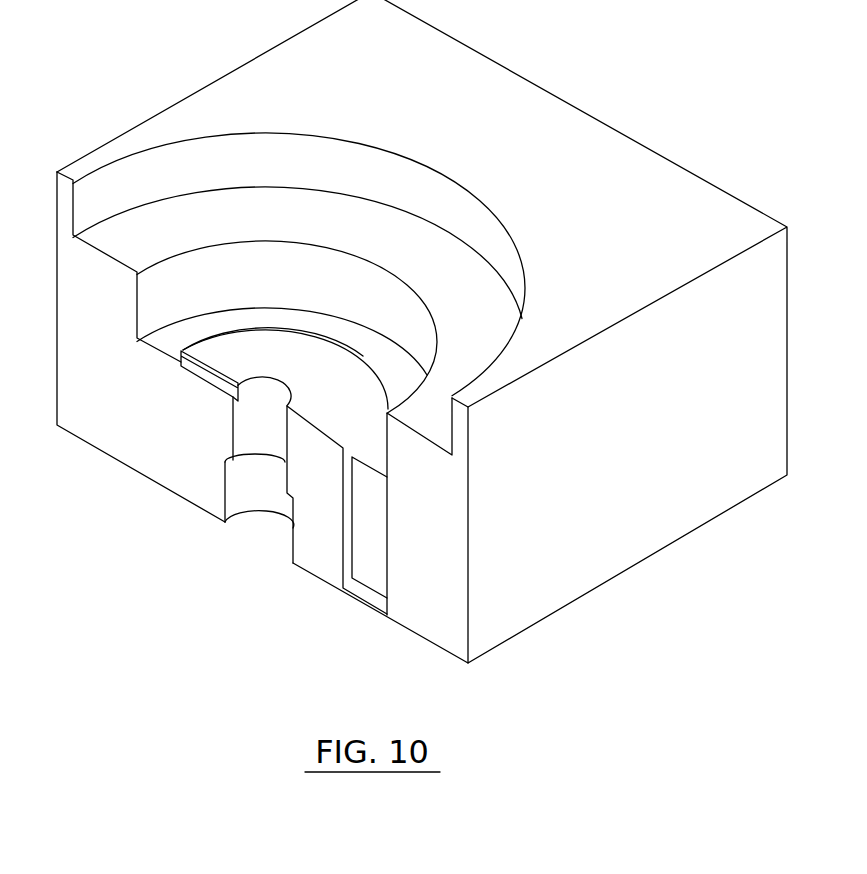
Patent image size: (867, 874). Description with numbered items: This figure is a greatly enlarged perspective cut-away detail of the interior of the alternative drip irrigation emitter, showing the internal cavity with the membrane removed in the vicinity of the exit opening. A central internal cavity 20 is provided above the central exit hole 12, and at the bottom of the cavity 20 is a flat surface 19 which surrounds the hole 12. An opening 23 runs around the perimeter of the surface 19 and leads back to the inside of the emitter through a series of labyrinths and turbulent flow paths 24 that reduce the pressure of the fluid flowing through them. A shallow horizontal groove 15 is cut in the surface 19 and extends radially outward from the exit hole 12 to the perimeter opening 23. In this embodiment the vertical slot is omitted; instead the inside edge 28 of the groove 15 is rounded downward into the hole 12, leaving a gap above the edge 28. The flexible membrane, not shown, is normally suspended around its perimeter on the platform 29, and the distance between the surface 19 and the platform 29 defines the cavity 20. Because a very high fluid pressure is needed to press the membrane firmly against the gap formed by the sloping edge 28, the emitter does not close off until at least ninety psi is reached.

The platform 29 is at (266, 213).
The central internal cavity 20 is at (203, 283).
The opening 23 is at (277, 320).
The flat surface 19 is at (295, 348).
The shallow horizontal groove 15 is at (212, 374).
The inside edge 28 is at (263, 381).
The central exit hole 12 is at (265, 527).
The labyrinths and turbulent flow paths 24 is at (360, 592).